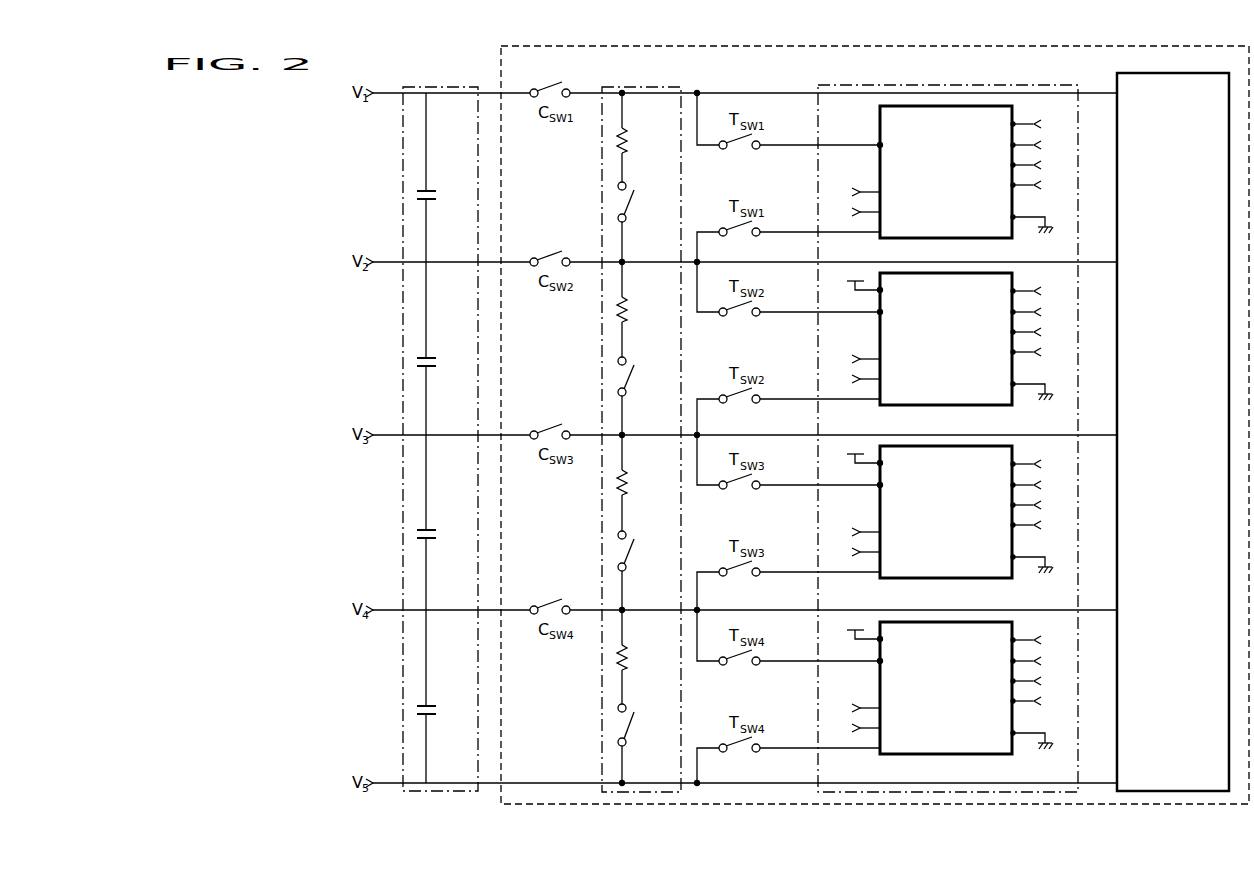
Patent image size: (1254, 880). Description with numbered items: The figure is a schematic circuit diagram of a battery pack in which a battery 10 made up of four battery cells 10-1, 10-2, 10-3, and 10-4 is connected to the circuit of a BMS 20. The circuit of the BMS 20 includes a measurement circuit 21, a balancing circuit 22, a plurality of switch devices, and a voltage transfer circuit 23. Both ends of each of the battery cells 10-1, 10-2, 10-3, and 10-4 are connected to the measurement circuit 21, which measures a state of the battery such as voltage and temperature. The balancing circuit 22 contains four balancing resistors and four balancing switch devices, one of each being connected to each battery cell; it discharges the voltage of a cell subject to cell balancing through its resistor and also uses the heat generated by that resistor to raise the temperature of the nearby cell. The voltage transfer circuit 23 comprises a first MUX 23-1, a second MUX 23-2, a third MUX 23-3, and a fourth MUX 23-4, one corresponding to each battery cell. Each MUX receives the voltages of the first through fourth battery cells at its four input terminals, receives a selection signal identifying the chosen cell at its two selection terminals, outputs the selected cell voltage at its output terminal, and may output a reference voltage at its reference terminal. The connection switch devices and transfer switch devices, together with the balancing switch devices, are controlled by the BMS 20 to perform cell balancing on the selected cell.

The battery 10 is at (442, 86).
The first battery cell 10-1 is at (443, 184).
The second battery cell 10-2 is at (443, 351).
The third battery cell 10-3 is at (443, 523).
The fourth battery cell 10-4 is at (443, 699).
The BMS 20 is at (857, 46).
The measurement circuit 21 is at (1160, 73).
The balancing circuit 22 is at (645, 86).
The voltage transfer circuit 23 is at (960, 84).
The first MUX 23-1 is at (937, 238).
The second MUX 23-2 is at (937, 405).
The third MUX 23-3 is at (937, 578).
The fourth MUX 23-4 is at (937, 754).